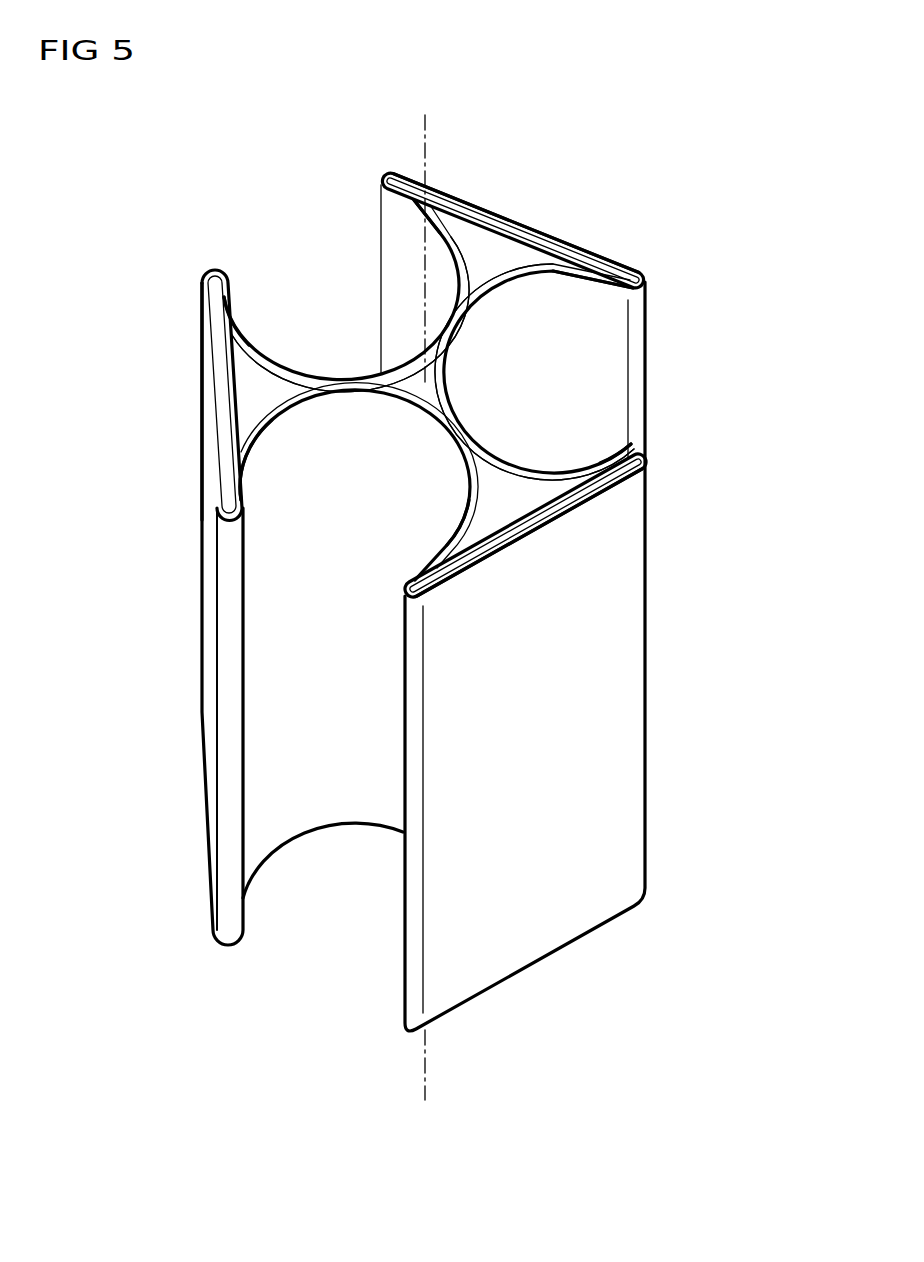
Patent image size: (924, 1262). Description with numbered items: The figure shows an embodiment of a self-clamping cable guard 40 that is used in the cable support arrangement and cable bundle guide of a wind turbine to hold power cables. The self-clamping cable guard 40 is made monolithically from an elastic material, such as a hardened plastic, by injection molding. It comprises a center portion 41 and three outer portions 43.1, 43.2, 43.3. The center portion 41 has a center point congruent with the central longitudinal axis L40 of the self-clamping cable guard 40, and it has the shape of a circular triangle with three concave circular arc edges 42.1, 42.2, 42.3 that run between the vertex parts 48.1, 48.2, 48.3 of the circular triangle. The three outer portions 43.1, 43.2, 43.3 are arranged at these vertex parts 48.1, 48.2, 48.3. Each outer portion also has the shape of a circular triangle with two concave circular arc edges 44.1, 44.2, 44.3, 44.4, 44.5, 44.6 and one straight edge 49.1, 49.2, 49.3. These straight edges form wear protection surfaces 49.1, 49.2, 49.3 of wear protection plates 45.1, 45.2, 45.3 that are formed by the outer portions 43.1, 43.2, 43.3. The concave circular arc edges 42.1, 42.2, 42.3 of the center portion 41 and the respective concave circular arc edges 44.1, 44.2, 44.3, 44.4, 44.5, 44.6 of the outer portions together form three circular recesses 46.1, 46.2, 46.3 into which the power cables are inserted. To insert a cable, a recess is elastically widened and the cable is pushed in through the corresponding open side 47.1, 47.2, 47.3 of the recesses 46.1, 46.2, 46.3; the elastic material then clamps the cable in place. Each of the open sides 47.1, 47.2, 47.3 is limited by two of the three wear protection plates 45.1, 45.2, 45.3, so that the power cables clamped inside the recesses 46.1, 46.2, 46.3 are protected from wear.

The self-clamping cable guard 40 is at (492, 84).
The central longitudinal axis L40 is at (423, 152).
The center portion 41 is at (468, 389).
The concave circular arc edge 42.1 is at (346, 296).
The concave circular arc edge 42.2 is at (534, 372).
The concave circular arc edge 42.3 is at (359, 481).
The outer portion 43.1 is at (141, 395).
The outer portion 43.2 is at (531, 218).
The outer portion 43.3 is at (597, 525).
The concave circular arc edge 44.1 is at (257, 343).
The concave circular arc edge 44.2 is at (267, 433).
The concave circular arc edge 44.3 is at (427, 229).
The concave circular arc edge 44.4 is at (560, 264).
The concave circular arc edge 44.5 is at (547, 467).
The concave circular arc edge 44.6 is at (457, 523).
The wear protection plate 45.1 is at (121, 401).
The wear protection plate 45.2 is at (536, 210).
The wear protection plate 45.3 is at (603, 532).
The circular recess 46.1 is at (305, 252).
The circular recess 46.2 is at (607, 372).
The circular recess 46.3 is at (313, 695).
The open side 47.1 is at (238, 254).
The open side 47.2 is at (587, 347).
The open side 47.3 is at (326, 953).
The vertex part 48.1 is at (343, 380).
The vertex part 48.2 is at (453, 320).
The vertex part 48.3 is at (450, 433).
The wear protection surface 49.1 is at (121, 401).
The wear protection surface 49.2 is at (540, 222).
The wear protection surface 49.3 is at (573, 513).